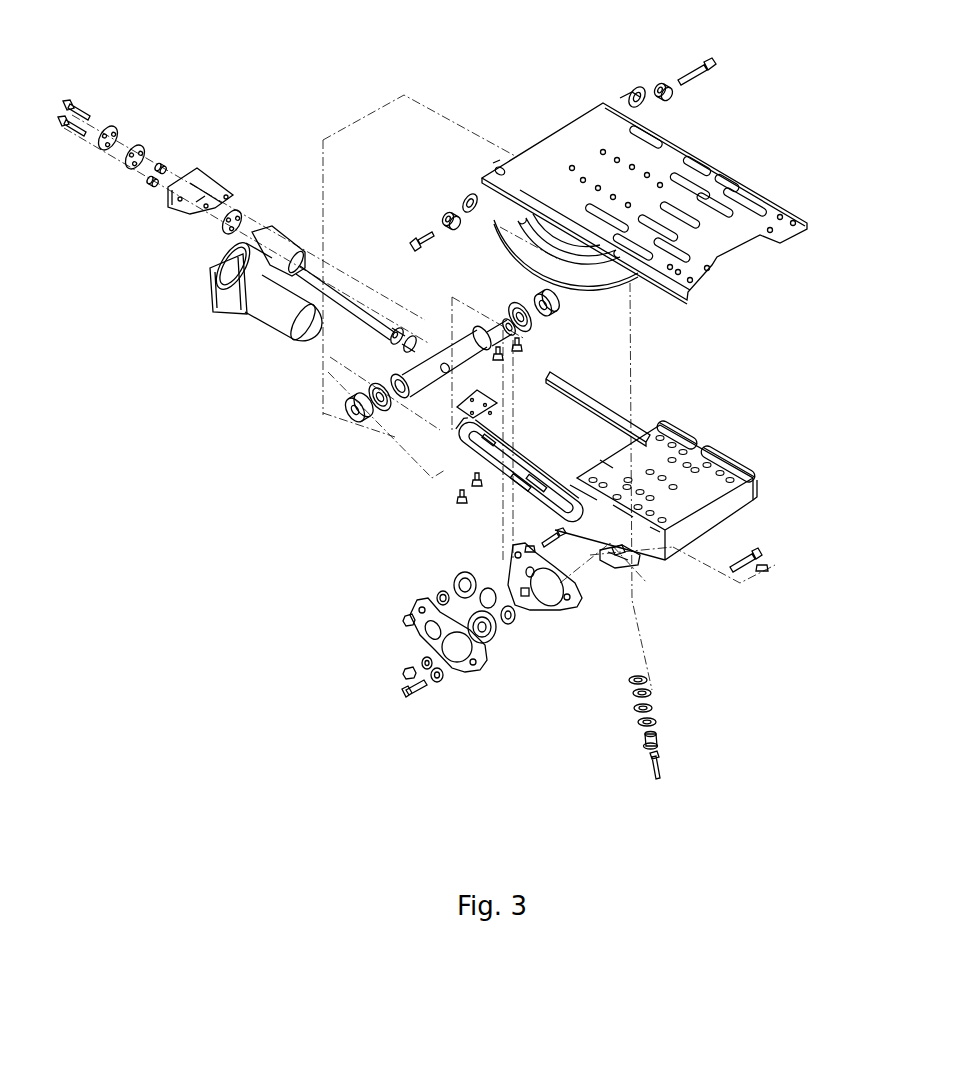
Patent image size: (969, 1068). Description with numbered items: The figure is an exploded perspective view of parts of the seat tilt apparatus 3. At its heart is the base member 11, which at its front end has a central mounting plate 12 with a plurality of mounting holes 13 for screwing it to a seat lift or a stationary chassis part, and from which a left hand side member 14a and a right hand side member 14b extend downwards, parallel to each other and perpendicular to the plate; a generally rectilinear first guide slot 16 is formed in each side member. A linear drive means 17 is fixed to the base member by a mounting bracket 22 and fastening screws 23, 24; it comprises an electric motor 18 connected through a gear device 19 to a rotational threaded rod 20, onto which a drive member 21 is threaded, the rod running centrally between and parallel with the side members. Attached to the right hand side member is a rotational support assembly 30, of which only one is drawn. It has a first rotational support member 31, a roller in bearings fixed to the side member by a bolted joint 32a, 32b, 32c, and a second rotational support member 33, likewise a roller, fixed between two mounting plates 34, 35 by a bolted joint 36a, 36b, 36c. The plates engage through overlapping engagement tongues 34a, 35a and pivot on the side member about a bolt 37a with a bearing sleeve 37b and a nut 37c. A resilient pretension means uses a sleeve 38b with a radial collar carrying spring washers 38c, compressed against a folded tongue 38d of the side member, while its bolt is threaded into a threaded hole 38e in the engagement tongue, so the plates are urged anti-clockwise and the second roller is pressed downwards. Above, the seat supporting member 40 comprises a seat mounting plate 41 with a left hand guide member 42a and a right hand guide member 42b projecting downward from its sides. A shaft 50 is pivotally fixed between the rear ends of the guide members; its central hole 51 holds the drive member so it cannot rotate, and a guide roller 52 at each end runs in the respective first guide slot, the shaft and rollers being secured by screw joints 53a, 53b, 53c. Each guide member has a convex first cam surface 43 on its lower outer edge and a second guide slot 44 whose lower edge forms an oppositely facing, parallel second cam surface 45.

The seat tilt apparatus 3 is at (262, 457).
The base member 11 is at (673, 428).
The central mounting plate 12 is at (717, 480).
The mounting holes 13 is at (677, 489).
The left hand side member 14a is at (737, 505).
The right hand side member 14b is at (483, 468).
The first guide slot 16 is at (503, 481).
The linear drive means 17 is at (207, 302).
The electric motor 18 is at (262, 326).
The gear device 19 is at (254, 229).
The rotational threaded rod 20 is at (337, 281).
The drive member 21 is at (410, 332).
The mounting bracket 22 is at (197, 168).
The fastening screws 23 is at (84, 107).
The fastening screws 24 is at (518, 346).
The rotational support assembly 30 is at (556, 709).
The first rotational support member 31 is at (497, 634).
The bolted joint 32a is at (755, 555).
The bolted joint 32b is at (516, 618).
The bolted joint 32c is at (403, 675).
The second rotational support member 33 is at (457, 580).
The mounting plate 34 is at (573, 593).
The engagement tongue 34a is at (523, 593).
The mounting plate 35 is at (462, 663).
The engagement tongue 35a is at (433, 640).
The bolted joint 36a is at (548, 535).
The bolted joint 36b is at (437, 597).
The bolted joint 36c is at (404, 619).
The bolt 37a is at (423, 691).
The bearing sleeve 37b is at (447, 671).
The nut 37c is at (768, 568).
The sleeve 38b is at (657, 741).
The spring washers 38c is at (650, 703).
The folded tongue 38d is at (636, 562).
The threaded hole 38e is at (547, 607).
The seat supporting member 40 is at (683, 147).
The seat mounting plate 41 is at (567, 127).
The left hand guide member 42a is at (735, 204).
The right hand guide member 42b is at (500, 222).
The first cam surface 43 is at (612, 287).
The second guide slot 44 is at (513, 223).
The second cam surface 45 is at (547, 232).
The shaft 50 is at (465, 338).
The central hole 51 is at (432, 388).
The guide roller 52 is at (350, 407).
The screw joint 53a is at (710, 63).
The screw joint 53b is at (660, 88).
The screw joint 53c is at (636, 95).